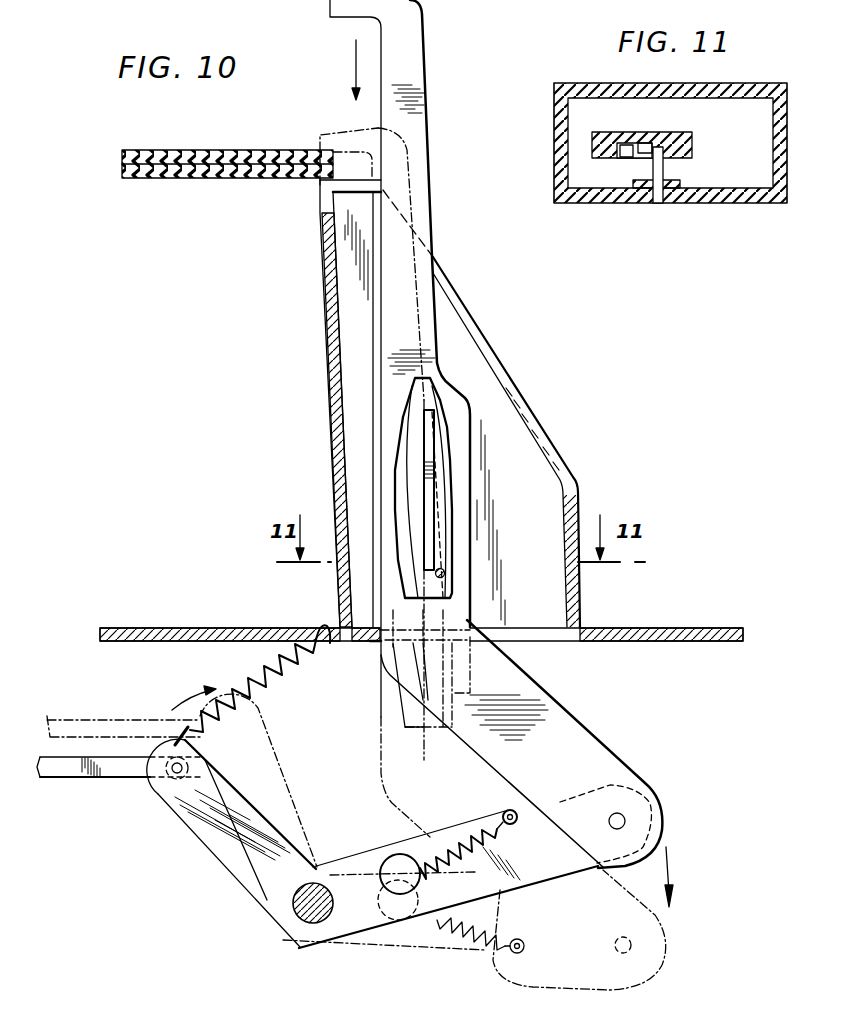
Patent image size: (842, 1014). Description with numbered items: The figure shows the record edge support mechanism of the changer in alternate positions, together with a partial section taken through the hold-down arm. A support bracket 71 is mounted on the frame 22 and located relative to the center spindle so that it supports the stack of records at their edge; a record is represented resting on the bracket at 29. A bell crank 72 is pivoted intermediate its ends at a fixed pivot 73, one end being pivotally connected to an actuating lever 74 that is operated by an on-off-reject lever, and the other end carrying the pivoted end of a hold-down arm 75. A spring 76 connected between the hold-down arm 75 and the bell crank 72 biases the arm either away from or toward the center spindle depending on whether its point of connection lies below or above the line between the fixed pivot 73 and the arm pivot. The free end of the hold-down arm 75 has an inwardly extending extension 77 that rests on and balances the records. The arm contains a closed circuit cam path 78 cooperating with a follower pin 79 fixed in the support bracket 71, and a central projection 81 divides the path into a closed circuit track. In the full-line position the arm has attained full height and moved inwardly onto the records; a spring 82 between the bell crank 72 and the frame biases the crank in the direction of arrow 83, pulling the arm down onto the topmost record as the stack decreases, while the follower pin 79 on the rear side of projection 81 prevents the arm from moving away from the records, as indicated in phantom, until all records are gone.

In FIG. 10, the frame 22 is at (700, 627).
In FIG. 10, the slab 29 is at (264, 150).
In FIG. 10, the support bracket 71 is at (540, 434).
In FIG. 11, the support bracket 71 is at (556, 85).
In FIG. 10, the bell crank 72 is at (183, 810).
In FIG. 10, the fixed pivot 73 is at (292, 901).
In FIG. 10, the actuating lever 74 is at (78, 778).
In FIG. 10, the hold-down arm 75 is at (535, 683).
In FIG. 11, the hold-down arm 75 is at (688, 133).
In FIG. 10, the spring 76 is at (459, 823).
In FIG. 10, the extension 77 is at (339, 133).
In FIG. 10, the cam path 78 is at (447, 400).
In FIG. 11, the cam path 78 is at (648, 143).
In FIG. 10, the follower pin 79 is at (445, 576).
In FIG. 11, the follower pin 79 is at (660, 167).
In FIG. 10, the projection 81 is at (420, 462).
In FIG. 11, the projection 81 is at (640, 153).
In FIG. 10, the spring 82 is at (288, 682).
In FIG. 10, the arrow 83 is at (188, 695).